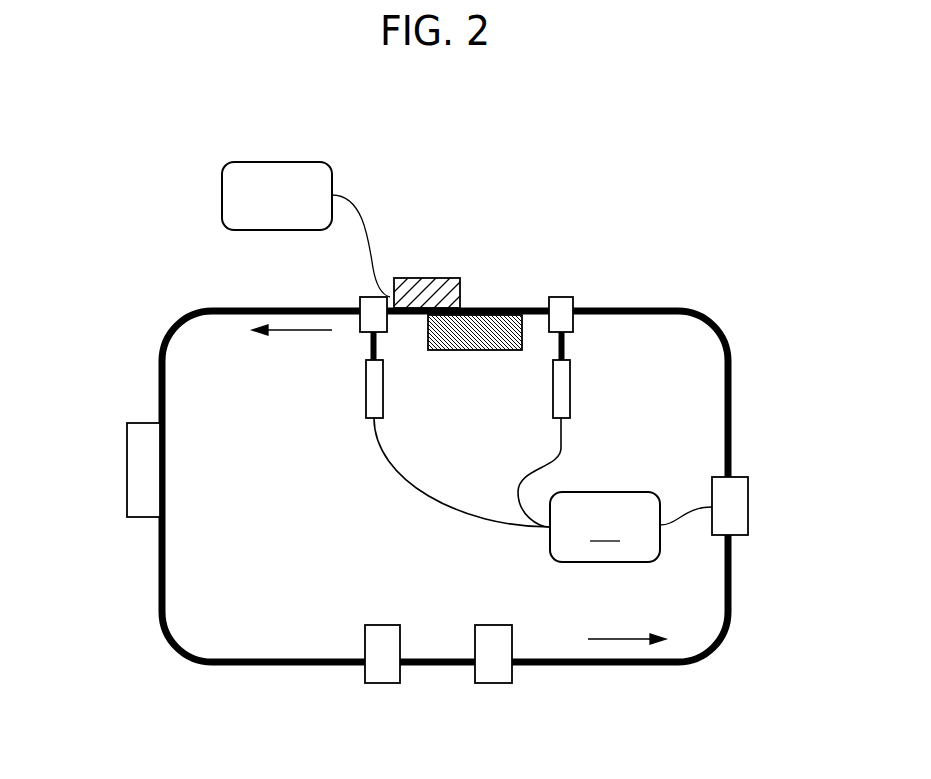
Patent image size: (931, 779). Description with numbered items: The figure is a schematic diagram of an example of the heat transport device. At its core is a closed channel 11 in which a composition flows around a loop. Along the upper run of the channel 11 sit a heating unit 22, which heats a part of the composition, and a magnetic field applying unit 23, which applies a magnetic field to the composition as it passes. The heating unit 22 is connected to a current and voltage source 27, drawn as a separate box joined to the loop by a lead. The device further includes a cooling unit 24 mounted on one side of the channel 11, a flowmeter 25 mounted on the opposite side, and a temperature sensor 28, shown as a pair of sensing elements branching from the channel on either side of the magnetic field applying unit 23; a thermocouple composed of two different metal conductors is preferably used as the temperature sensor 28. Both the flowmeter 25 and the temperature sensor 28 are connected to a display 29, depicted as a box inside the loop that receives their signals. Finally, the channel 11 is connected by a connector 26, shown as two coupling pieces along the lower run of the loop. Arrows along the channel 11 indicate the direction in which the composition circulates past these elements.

The channel 11 is at (638, 308).
The heating unit 22 is at (432, 278).
The magnetic field applying unit 23 is at (480, 350).
The cooling unit 24 is at (127, 470).
The flowmeter 25 is at (748, 504).
The connector 26 is at (387, 683).
The current and voltage source 27 is at (222, 192).
The temperature sensor 28 is at (553, 378).
The display 29 is at (631, 527).